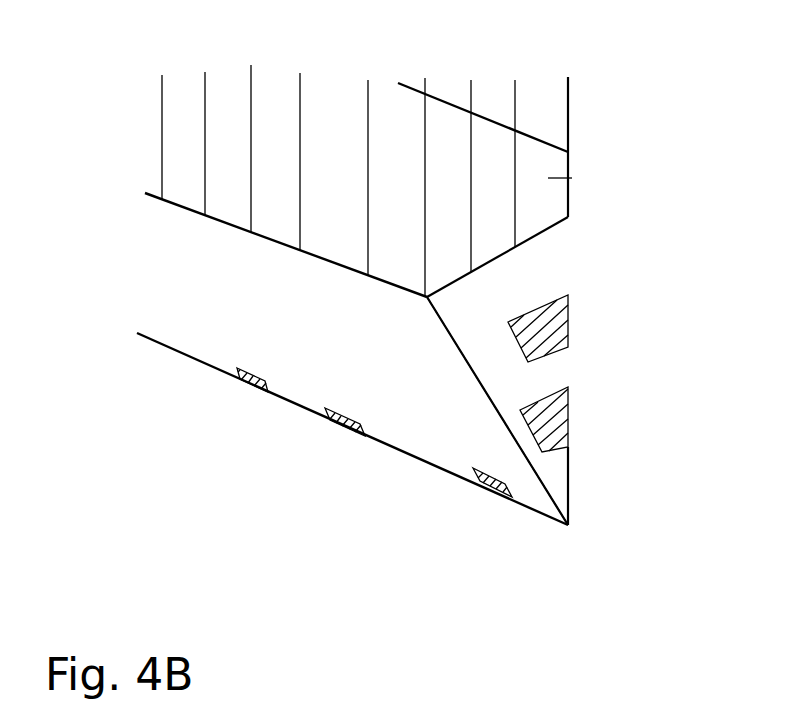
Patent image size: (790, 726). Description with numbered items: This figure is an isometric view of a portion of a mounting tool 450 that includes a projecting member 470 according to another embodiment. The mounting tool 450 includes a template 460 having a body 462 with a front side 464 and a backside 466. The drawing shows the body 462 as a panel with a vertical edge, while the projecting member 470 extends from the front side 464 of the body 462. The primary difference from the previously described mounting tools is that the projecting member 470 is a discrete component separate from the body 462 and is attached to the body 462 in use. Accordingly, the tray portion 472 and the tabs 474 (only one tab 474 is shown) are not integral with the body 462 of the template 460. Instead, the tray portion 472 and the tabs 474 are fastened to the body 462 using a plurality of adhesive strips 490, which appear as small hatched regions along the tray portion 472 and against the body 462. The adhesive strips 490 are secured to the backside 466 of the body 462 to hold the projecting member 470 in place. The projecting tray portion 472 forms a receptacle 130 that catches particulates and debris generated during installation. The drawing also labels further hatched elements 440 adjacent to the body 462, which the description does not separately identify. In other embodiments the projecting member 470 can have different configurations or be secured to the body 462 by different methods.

The receptacle 130 is at (473, 79).
The body 462 is at (557, 113).
The mounting tool 450 is at (597, 162).
The front side 464 is at (572, 178).
The template 460 is at (568, 198).
The tab 474 is at (548, 277).
The adhesive strips 490 is at (553, 335).
The chip breaker pockets 440 is at (558, 430).
The tray portion 472 is at (208, 320).
The projecting member 470 is at (283, 420).
The backside 466 is at (574, 474).